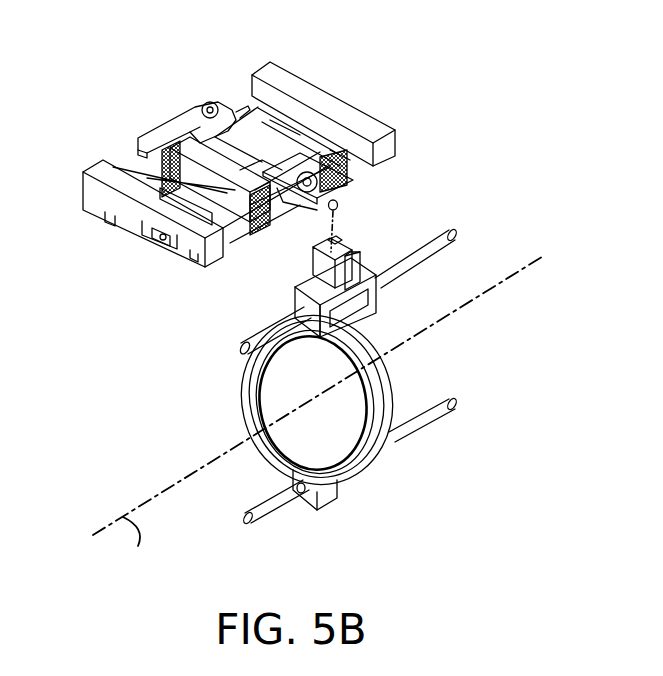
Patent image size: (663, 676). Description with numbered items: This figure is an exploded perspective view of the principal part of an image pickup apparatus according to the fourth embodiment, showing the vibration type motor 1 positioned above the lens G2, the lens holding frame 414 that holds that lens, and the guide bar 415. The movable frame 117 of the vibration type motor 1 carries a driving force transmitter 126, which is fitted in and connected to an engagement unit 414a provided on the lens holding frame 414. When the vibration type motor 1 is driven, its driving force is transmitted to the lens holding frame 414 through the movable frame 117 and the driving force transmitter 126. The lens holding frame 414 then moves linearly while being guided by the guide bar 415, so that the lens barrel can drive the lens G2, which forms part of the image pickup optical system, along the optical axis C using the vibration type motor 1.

The vibration type motor 1 is at (170, 123).
The movable frame 117 is at (295, 162).
The driving force transmitter 126 is at (338, 203).
The lens holding frame 414 is at (263, 420).
The engagement unit 414a is at (340, 247).
The guide bar 415 is at (432, 410).
The lens G2 is at (298, 402).
The optical axis C is at (142, 552).